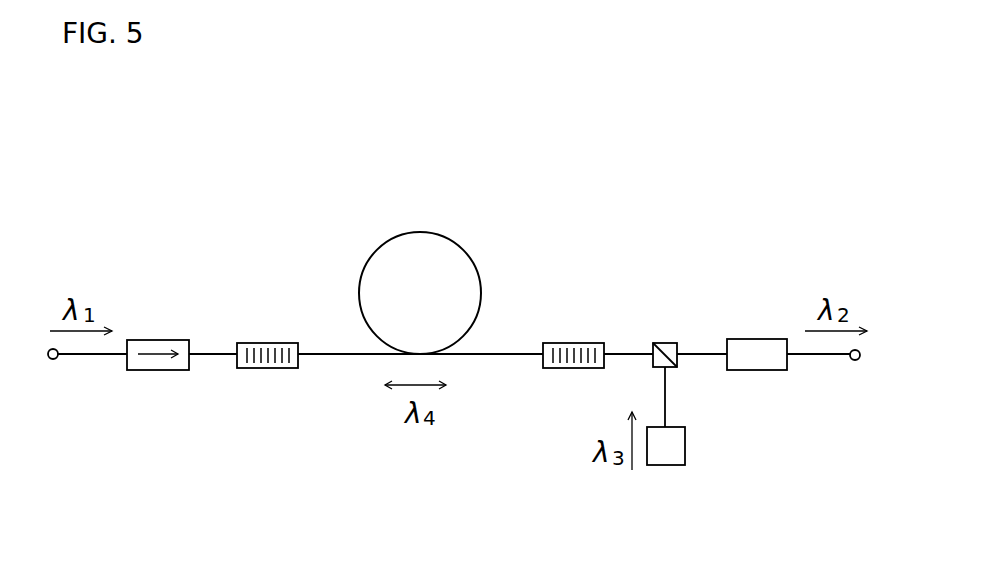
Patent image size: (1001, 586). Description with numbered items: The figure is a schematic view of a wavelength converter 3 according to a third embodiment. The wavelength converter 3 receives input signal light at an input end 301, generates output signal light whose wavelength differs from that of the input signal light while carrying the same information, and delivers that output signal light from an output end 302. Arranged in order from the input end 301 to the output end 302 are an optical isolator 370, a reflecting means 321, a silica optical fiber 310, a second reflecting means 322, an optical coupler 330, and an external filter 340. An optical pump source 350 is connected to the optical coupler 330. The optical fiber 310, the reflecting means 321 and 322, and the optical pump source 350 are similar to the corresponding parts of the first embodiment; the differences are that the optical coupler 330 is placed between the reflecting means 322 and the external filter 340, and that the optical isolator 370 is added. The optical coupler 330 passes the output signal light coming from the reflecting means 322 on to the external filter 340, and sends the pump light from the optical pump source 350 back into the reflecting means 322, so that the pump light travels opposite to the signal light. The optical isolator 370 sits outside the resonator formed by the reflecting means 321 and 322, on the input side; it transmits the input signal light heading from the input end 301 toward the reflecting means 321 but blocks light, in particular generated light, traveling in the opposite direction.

The wavelength converter 3 is at (333, 200).
The input end 301 is at (53, 362).
The output end 302 is at (855, 362).
The silica optical fiber 310 is at (450, 237).
The reflecting means 321 is at (270, 341).
The reflecting means 322 is at (586, 341).
The optical coupler 330 is at (665, 341).
The external filter 340 is at (760, 337).
The optical pump source 350 is at (662, 467).
The optical isolator 370 is at (172, 338).